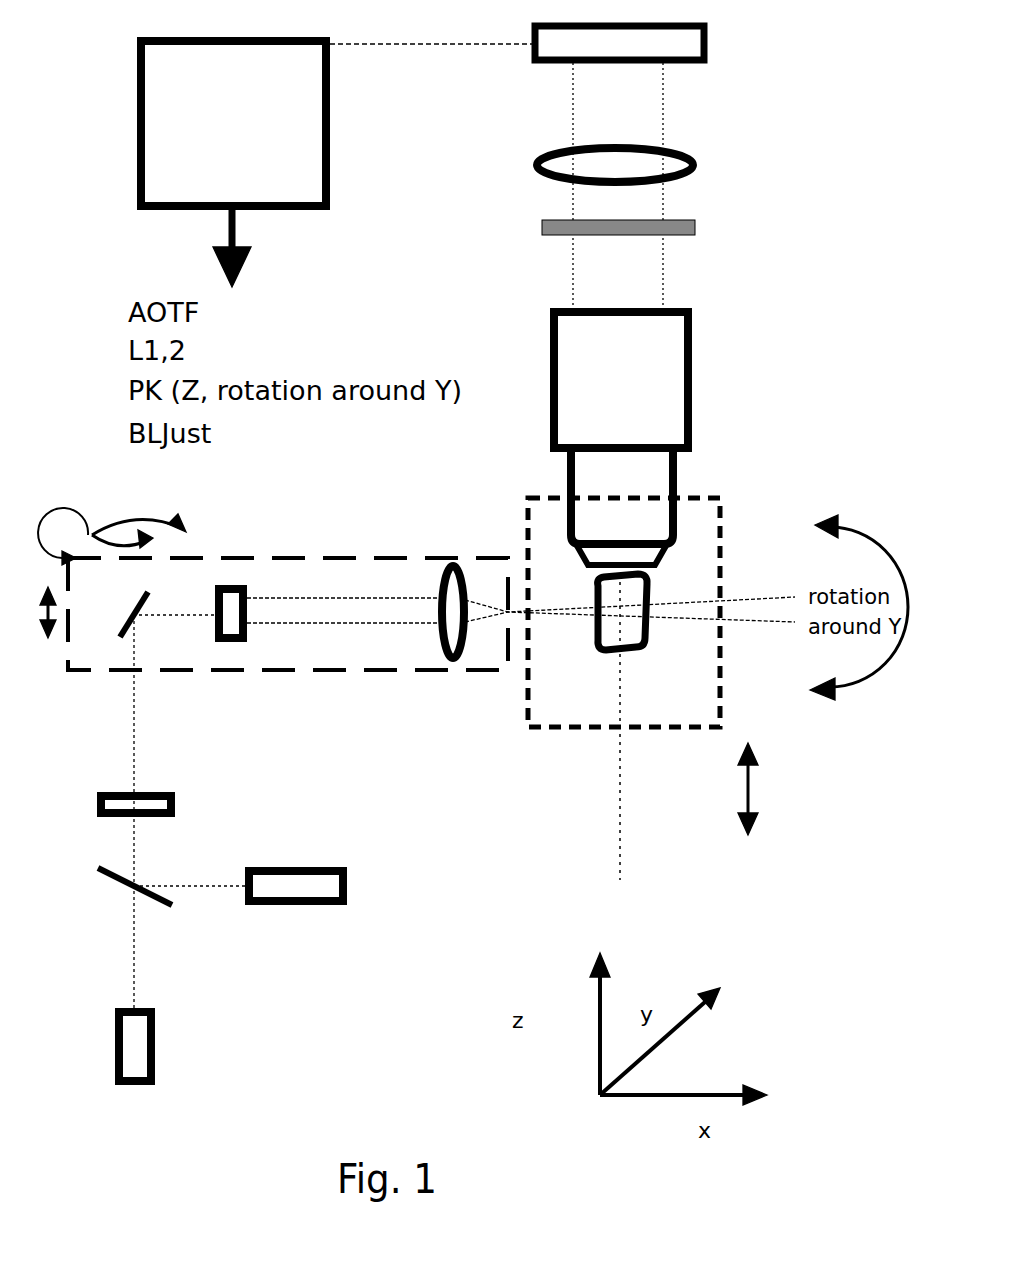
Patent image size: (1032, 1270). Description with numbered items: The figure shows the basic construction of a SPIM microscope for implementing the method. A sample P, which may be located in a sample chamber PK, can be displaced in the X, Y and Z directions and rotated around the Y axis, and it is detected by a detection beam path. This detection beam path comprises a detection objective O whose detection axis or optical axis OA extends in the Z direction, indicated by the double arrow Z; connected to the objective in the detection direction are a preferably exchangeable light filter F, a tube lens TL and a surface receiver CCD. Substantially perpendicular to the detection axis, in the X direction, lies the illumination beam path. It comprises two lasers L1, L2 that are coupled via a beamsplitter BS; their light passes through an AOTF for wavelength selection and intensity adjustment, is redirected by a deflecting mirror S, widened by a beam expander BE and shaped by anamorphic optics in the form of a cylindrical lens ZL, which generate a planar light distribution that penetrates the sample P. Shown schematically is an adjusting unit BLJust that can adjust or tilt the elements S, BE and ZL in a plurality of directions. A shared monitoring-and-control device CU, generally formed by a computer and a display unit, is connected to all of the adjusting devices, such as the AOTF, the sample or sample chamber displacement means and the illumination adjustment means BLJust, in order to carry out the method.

The monitoring-and-control device CU is at (336, 164).
The surface receiver CCD is at (670, 38).
The tube lens TL is at (642, 166).
The light filter F is at (638, 222).
The detection objective O is at (646, 438).
The sample chamber PK is at (649, 606).
The sample P is at (627, 630).
The optical axis OA is at (639, 731).
The detection axis Z direction Z is at (762, 789).
The beam expander BE is at (273, 589).
The deflecting mirror S is at (123, 607).
The cylindrical lens ZL is at (447, 586).
The adjusting unit BLJust is at (331, 694).
The element AOTF is at (182, 809).
The beamsplitter BS is at (121, 900).
The laser L2 is at (296, 915).
The laser L1 is at (172, 1046).